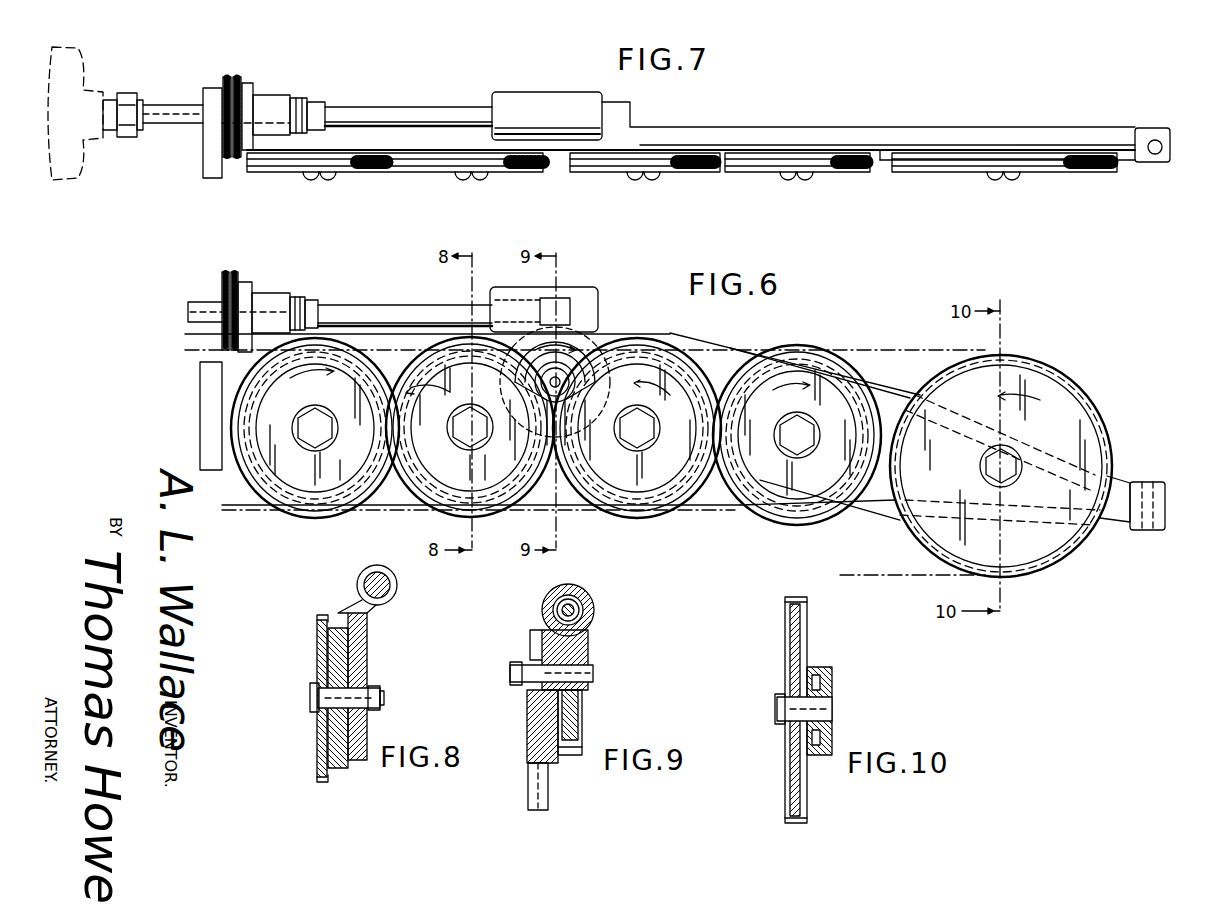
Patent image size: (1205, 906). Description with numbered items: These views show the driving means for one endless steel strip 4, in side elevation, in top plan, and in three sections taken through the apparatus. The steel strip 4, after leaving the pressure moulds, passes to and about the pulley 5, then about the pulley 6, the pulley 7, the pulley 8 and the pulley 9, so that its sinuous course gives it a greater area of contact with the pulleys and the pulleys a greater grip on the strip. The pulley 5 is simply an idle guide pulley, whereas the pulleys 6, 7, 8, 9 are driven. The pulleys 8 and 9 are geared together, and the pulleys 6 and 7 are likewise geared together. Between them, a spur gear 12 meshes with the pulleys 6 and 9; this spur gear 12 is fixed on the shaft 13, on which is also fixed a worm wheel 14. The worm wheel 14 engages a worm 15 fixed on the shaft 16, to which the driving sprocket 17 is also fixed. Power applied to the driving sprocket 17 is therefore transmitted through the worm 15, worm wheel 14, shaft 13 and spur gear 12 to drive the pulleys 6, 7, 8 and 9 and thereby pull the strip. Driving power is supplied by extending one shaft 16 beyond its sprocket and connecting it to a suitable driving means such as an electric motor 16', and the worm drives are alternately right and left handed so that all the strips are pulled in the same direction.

In FIG. 6, the steel strip 4 is at (862, 578).
In FIG. 7, the pulley 5 is at (1080, 170).
In FIG. 6, the pulley 5 is at (1001, 466).
In FIG. 10, the pulley 5 is at (790, 640).
In FIG. 7, the pulley 6 is at (688, 170).
In FIG. 6, the pulley 6 is at (637, 428).
In FIG. 7, the pulley 7 is at (843, 170).
In FIG. 6, the pulley 7 is at (797, 435).
In FIG. 7, the pulley 8 is at (352, 170).
In FIG. 6, the pulley 8 is at (315, 428).
In FIG. 7, the pulley 9 is at (522, 170).
In FIG. 6, the pulley 9 is at (470, 427).
In FIG. 8, the pulley 9 is at (330, 745).
In FIG. 6, the spur gear 12 is at (608, 335).
In FIG. 9, the spur gear 12 is at (520, 662).
In FIG. 6, the shaft 13 is at (555, 373).
In FIG. 9, the shaft 13 is at (553, 675).
In FIG. 6, the worm wheel 14 is at (598, 330).
In FIG. 9, the worm wheel 14 is at (570, 712).
In FIG. 6, the worm 15 is at (563, 300).
In FIG. 9, the worm 15 is at (586, 603).
In FIG. 7, the shaft 16 is at (357, 102).
In FIG. 6, the shaft 16 is at (366, 302).
In FIG. 8, the shaft 16 is at (356, 585).
In FIG. 9, the shaft 16 is at (577, 590).
In FIG. 7, the electric motor 16' is at (90, 112).
In FIG. 7, the driving sprocket 17 is at (238, 77).
In FIG. 6, the driving sprocket 17 is at (237, 275).